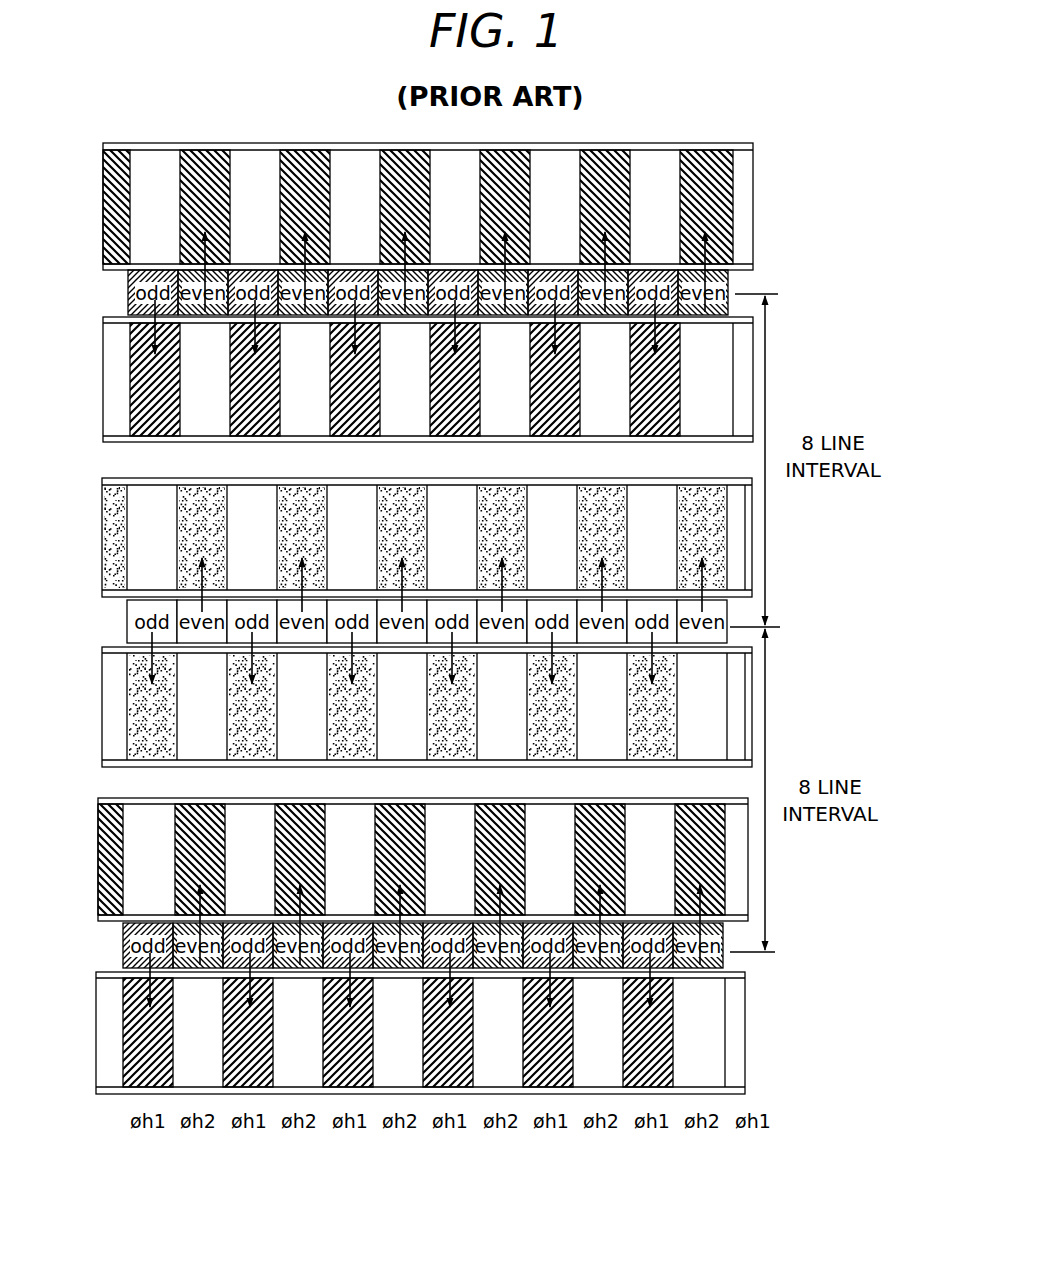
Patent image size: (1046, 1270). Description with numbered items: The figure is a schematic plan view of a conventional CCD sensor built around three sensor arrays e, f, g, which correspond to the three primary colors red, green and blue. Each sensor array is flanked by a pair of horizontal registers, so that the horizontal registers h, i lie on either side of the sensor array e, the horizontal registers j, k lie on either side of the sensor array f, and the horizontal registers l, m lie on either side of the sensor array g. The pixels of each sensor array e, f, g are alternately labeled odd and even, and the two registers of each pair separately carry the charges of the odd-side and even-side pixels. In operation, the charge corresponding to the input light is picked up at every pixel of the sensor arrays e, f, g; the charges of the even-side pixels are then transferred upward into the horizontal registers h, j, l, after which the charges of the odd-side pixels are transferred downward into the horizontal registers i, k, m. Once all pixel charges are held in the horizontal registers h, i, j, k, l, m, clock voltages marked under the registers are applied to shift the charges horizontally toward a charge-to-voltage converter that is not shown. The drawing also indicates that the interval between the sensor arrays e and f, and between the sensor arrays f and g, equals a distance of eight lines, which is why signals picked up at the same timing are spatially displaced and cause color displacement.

The horizontal register h is at (395, 206).
The sensor array e is at (90, 268).
The horizontal register i is at (397, 379).
The horizontal register j is at (395, 537).
The sensor array f is at (88, 598).
The horizontal register k is at (394, 707).
The horizontal register l is at (392, 859).
The sensor array g is at (86, 922).
The horizontal register m is at (387, 1033).